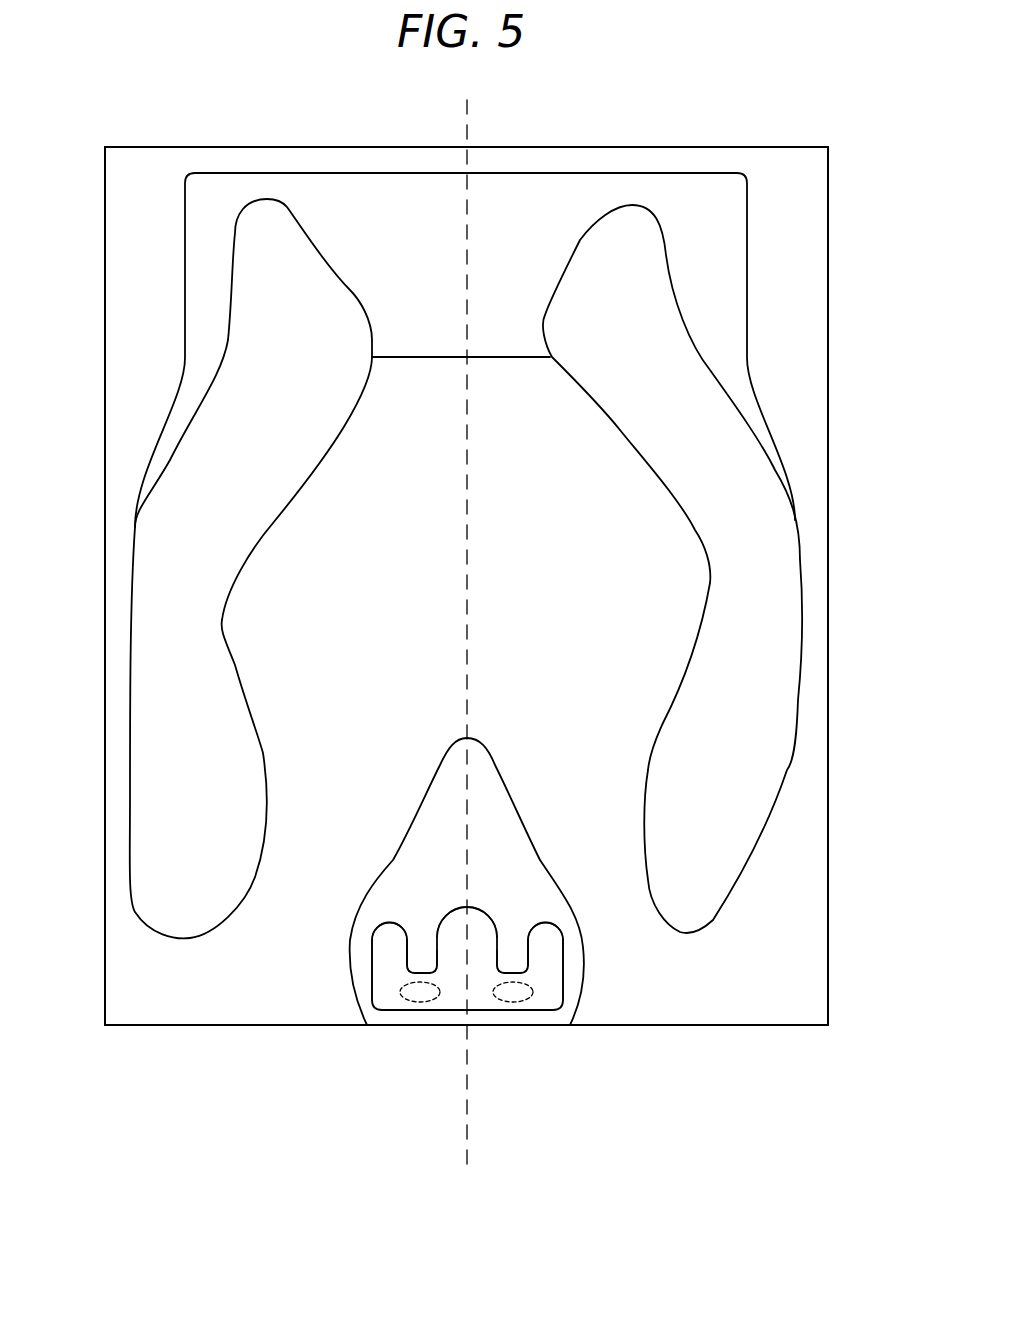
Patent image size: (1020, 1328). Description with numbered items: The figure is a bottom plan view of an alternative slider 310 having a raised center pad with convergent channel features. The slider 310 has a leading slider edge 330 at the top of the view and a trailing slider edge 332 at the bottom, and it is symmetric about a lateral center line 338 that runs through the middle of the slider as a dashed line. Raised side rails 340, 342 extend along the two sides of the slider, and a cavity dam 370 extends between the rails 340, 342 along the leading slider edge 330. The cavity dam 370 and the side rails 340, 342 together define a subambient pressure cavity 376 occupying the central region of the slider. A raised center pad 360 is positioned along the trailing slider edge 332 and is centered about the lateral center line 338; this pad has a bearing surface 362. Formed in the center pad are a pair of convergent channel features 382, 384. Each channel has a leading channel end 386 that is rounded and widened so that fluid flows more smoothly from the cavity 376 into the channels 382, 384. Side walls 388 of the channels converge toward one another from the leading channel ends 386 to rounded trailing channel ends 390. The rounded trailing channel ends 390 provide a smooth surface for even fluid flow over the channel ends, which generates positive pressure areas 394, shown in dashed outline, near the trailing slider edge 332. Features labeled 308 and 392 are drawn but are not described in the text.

The longitudinal axis 308 is at (467, 805).
The slider 310 is at (703, 77).
The leading slider edge 330 is at (325, 147).
The trailing slider edge 332 is at (685, 1025).
The lateral center line 338 is at (468, 1110).
The raised side rail 340 is at (180, 665).
The raised side rail 342 is at (767, 642).
The raised center pad 360 is at (467, 720).
The bearing surface 362 is at (465, 997).
The cavity dam 370 is at (482, 203).
The subambient pressure cavity 376 is at (430, 517).
The convergent channel feature 382 is at (400, 958).
The convergent channel feature 384 is at (540, 950).
The leading channel end 386 is at (507, 930).
The side wall 388 is at (348, 1011).
The rounded trailing channel end 390 is at (512, 972).
The channels 392 is at (423, 950).
The positive pressure area 394 is at (420, 993).